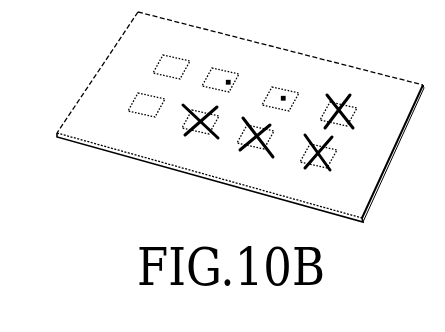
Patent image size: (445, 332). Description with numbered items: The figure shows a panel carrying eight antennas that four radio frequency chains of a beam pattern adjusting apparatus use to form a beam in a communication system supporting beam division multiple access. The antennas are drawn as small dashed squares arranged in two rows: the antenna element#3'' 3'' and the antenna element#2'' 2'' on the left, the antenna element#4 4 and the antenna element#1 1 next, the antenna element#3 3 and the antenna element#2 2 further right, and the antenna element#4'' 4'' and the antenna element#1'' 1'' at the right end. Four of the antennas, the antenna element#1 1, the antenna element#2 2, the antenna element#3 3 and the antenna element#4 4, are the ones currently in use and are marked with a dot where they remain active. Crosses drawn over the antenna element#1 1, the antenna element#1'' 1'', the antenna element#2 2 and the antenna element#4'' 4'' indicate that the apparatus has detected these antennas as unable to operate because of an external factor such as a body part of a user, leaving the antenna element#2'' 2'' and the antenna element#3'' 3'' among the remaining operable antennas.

The antenna element# 1 is at (200, 133).
The antenna element#1" 1'' is at (318, 161).
The antenna element# 2 is at (255, 147).
The antenna element#2" 2'' is at (146, 118).
The antenna element# 3 is at (280, 87).
The antenna element#3" 3'' is at (172, 55).
The antenna element# 4 is at (222, 70).
The antenna element#4" 4'' is at (339, 101).